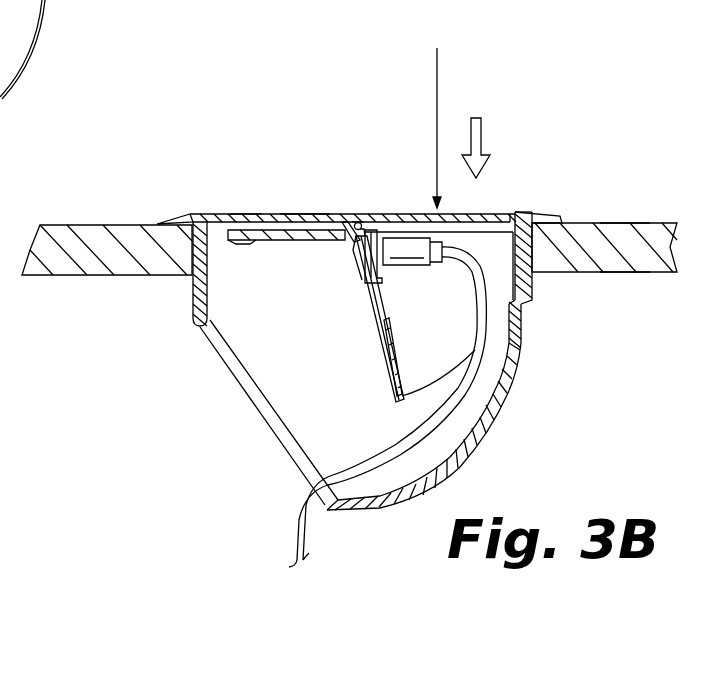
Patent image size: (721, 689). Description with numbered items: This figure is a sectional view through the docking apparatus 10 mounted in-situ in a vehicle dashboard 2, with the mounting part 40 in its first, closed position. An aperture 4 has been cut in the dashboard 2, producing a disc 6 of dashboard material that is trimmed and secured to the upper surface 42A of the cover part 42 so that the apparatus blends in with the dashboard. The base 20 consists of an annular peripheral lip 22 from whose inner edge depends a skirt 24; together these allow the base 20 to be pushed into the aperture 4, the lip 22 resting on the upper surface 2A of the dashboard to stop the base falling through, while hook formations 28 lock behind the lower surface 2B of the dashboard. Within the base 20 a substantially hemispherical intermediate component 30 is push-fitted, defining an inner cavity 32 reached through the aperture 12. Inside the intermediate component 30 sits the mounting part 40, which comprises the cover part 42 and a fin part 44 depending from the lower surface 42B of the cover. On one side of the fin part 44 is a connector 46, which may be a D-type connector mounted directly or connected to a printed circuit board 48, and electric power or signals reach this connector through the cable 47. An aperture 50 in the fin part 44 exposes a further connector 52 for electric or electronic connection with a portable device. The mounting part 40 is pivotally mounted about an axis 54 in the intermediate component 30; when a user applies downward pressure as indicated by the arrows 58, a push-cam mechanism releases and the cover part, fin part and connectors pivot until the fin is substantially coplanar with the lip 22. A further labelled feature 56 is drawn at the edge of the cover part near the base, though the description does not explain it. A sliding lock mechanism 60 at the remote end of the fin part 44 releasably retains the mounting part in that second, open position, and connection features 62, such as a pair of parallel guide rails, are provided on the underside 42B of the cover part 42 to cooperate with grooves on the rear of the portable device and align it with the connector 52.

The vehicle dashboard 2 is at (599, 238).
The upper surface of the dashboard 2A is at (628, 222).
The lower surface of the dashboard 2B is at (633, 274).
The aperture 4 is at (193, 247).
The disc of dashboard material 6 is at (318, 213).
The docking apparatus 10 is at (166, 176).
The aperture 12 is at (296, 452).
The base 20 is at (548, 210).
The annular peripheral lip 22 is at (166, 212).
The skirt 24 is at (533, 301).
The hook formations 28 is at (535, 279).
The intermediate component 30 is at (521, 210).
The inner cavity 32 is at (320, 425).
The mounting part 40 is at (445, 118).
The cover part 42 is at (283, 213).
The upper surface of the cover part 42A is at (246, 210).
The lower surface of the cover part 42B is at (270, 242).
The fin part 44 is at (371, 320).
The connector 46 is at (404, 232).
The cable 47 is at (303, 522).
The printed circuit board 48 is at (380, 222).
The aperture 50 is at (357, 231).
The further connector 52 is at (345, 213).
The axis 54 is at (357, 213).
The plate edge 56 is at (517, 210).
The arrows 58 is at (477, 122).
The sliding lock mechanism 60 is at (395, 397).
The connection features 62 is at (247, 245).